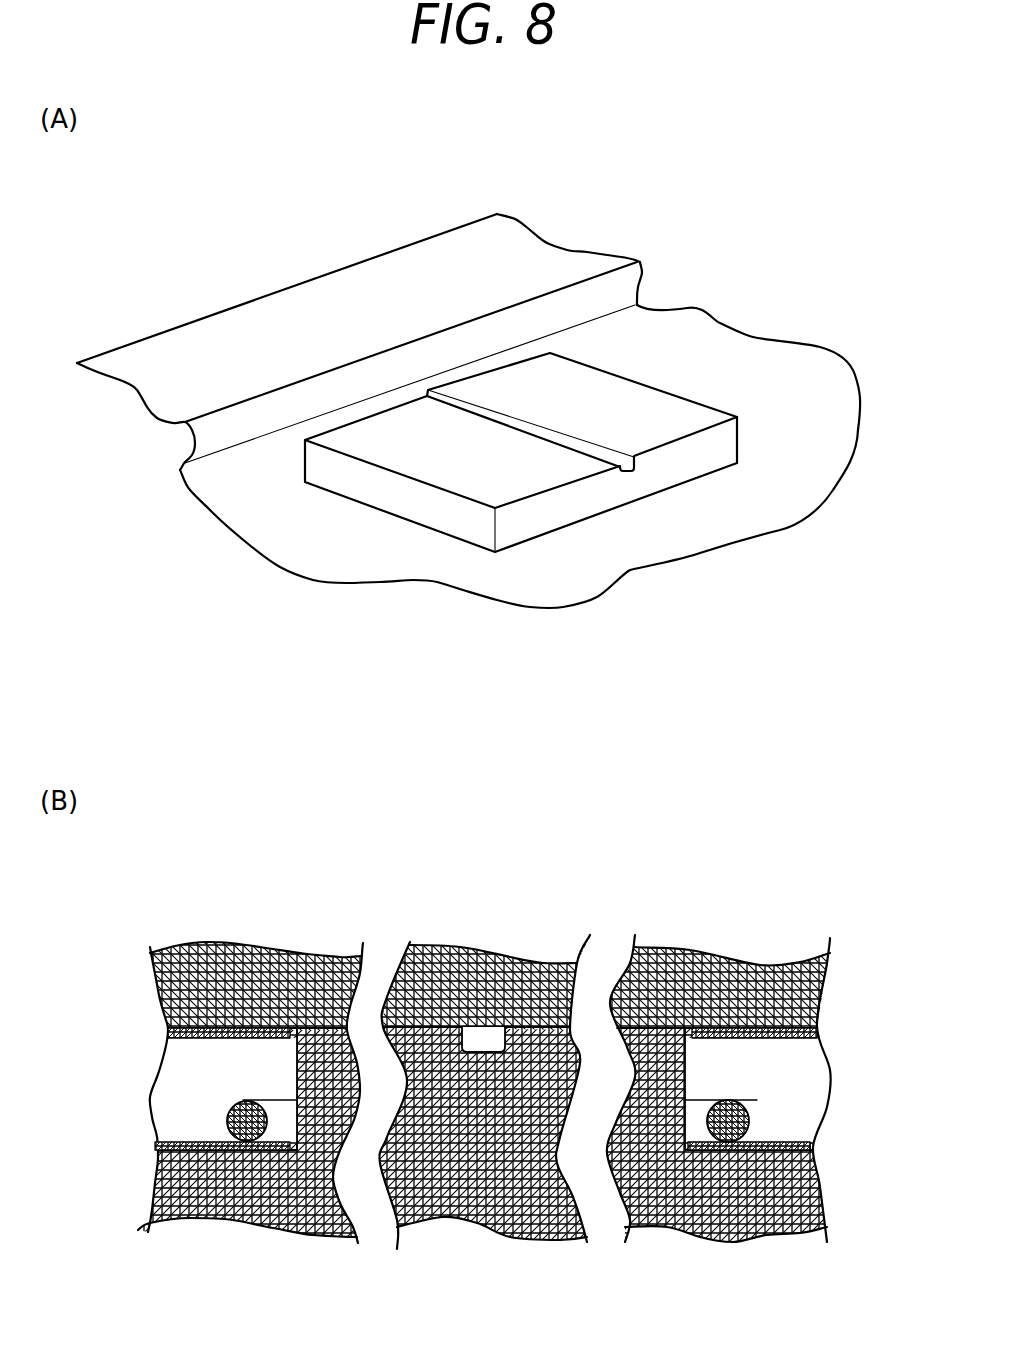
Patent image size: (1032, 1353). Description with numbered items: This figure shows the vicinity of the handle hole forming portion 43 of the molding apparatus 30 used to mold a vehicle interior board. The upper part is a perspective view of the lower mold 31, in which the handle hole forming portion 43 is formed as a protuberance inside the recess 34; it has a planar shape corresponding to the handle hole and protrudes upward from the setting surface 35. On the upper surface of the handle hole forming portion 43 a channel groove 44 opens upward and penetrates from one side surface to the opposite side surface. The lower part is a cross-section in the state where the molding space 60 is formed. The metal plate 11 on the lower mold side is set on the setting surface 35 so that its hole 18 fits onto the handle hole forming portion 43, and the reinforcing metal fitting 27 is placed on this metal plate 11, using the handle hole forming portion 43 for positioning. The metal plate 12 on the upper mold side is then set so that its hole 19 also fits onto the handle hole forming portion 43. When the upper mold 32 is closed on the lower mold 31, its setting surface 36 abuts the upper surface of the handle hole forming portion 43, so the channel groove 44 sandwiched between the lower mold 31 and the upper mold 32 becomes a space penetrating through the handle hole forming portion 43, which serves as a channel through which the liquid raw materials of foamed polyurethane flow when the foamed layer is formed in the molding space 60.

The molding apparatus 30 is at (201, 240).
The lower mold 31 is at (433, 275).
The upper mold 32 is at (757, 975).
The recess 34 is at (662, 330).
The setting surface 35 is at (787, 407).
The setting surface 36 is at (540, 1030).
The handle hole forming portion 43 is at (682, 405).
The channel groove 44 is at (582, 452).
The metal plate 12 is at (167, 1063).
The molding space 60 is at (167, 1093).
The hole 19 is at (293, 1040).
The metal plate 11 is at (187, 1137).
The hole 18 is at (688, 1128).
The reinforcing metal fitting 27 is at (750, 1113).